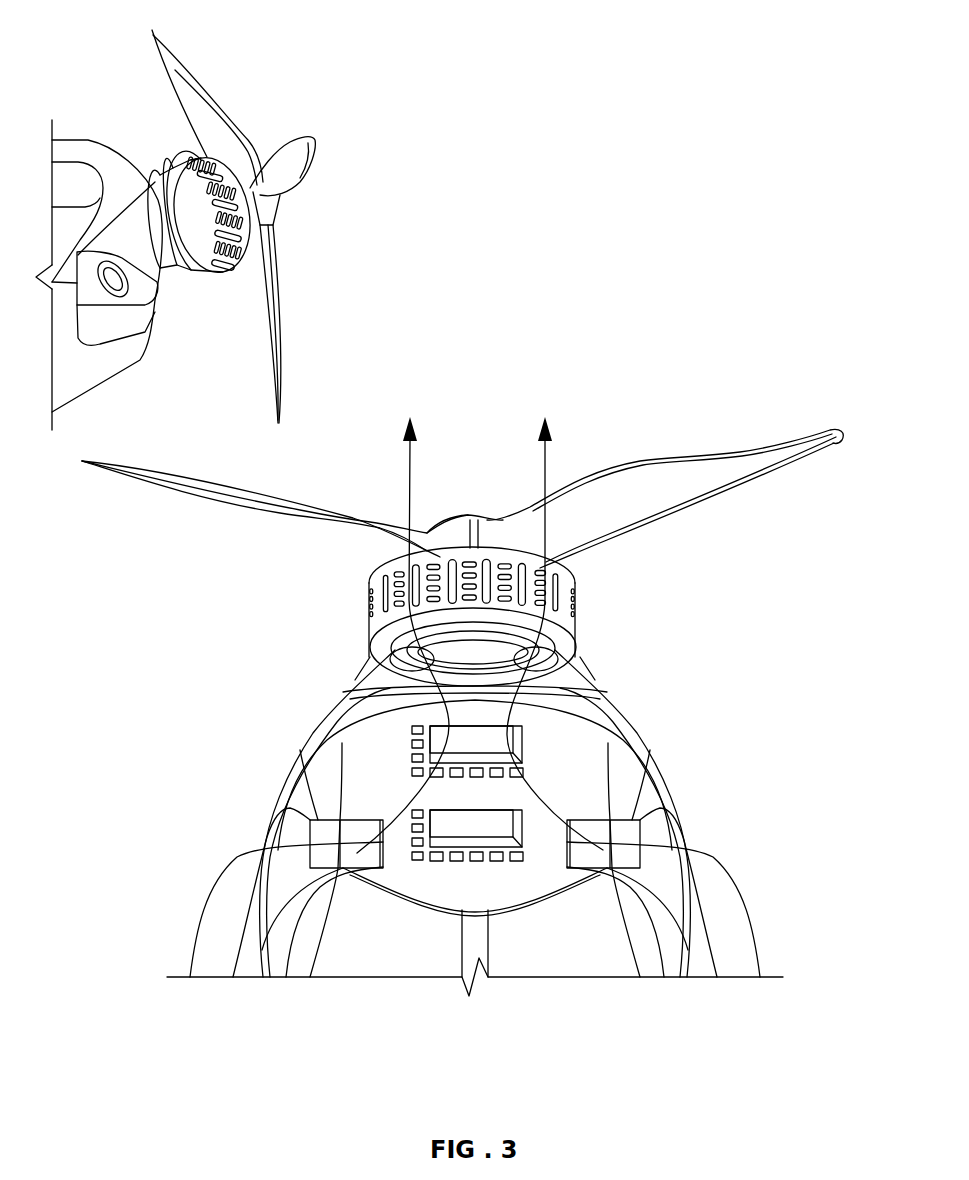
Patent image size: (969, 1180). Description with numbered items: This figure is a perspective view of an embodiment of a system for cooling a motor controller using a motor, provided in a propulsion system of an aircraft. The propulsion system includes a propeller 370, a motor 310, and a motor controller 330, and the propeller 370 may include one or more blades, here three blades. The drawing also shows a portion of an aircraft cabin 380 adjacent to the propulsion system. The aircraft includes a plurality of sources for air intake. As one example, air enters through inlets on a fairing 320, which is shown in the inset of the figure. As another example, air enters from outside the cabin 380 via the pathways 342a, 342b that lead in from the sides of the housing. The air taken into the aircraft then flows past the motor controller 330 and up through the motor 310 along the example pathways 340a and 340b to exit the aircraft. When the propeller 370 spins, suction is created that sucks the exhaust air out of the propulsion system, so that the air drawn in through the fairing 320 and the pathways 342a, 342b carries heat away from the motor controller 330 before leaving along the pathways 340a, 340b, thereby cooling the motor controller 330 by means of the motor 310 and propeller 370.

The motor 310 is at (172, 154).
The fairing 320 is at (133, 277).
The motor controller 330 is at (535, 751).
The pathway 340a is at (404, 480).
The pathway 340b is at (550, 464).
The pathway 342a is at (200, 914).
The pathway 342b is at (750, 914).
The propeller 370 is at (247, 97).
The aircraft cabin 380 is at (303, 745).